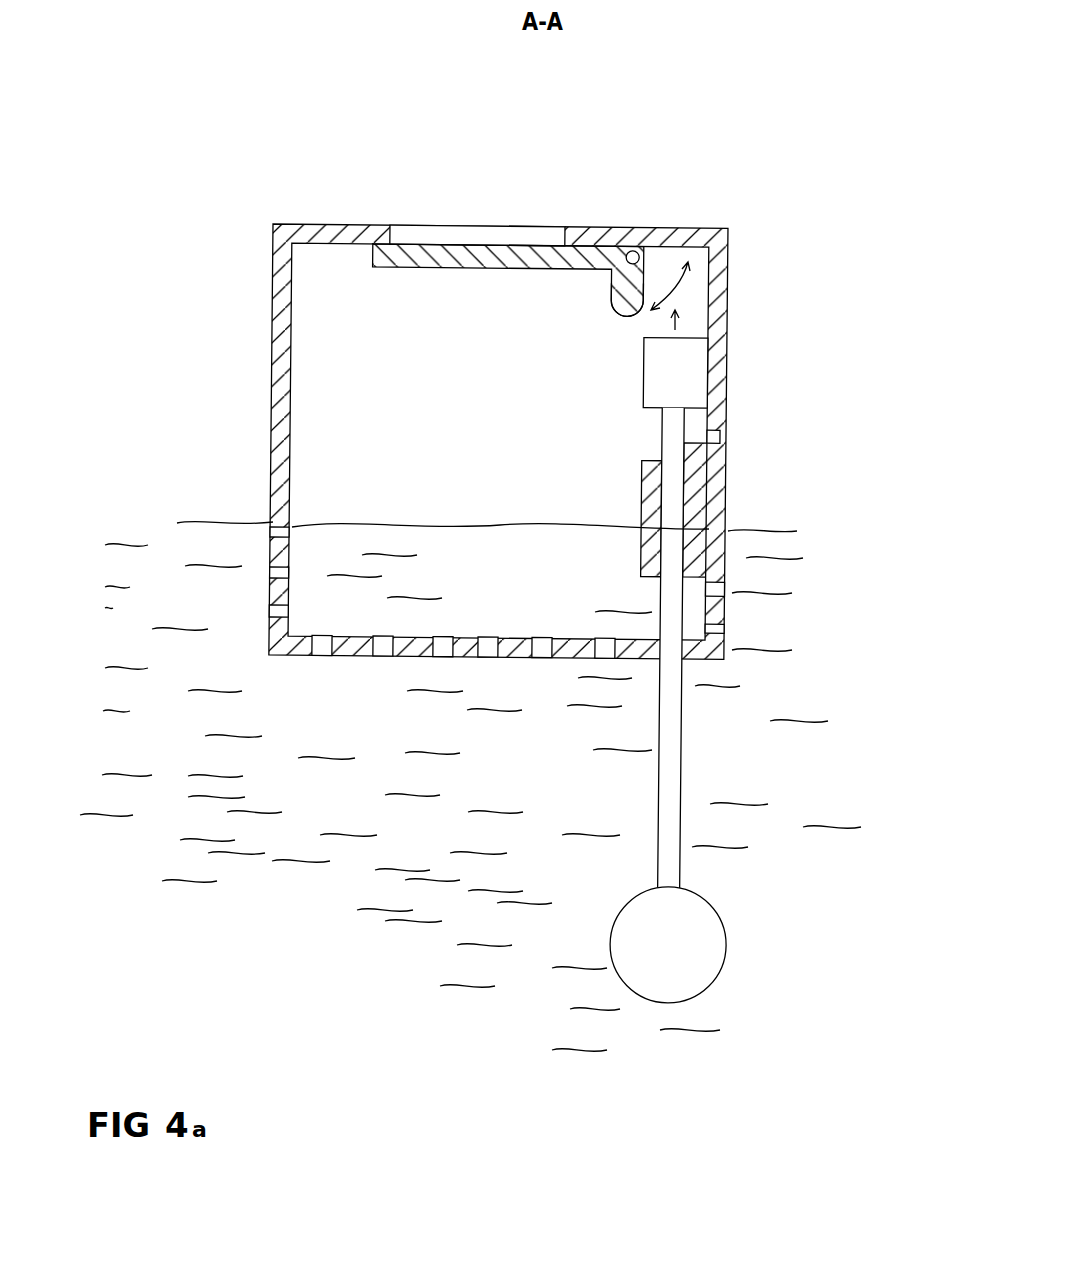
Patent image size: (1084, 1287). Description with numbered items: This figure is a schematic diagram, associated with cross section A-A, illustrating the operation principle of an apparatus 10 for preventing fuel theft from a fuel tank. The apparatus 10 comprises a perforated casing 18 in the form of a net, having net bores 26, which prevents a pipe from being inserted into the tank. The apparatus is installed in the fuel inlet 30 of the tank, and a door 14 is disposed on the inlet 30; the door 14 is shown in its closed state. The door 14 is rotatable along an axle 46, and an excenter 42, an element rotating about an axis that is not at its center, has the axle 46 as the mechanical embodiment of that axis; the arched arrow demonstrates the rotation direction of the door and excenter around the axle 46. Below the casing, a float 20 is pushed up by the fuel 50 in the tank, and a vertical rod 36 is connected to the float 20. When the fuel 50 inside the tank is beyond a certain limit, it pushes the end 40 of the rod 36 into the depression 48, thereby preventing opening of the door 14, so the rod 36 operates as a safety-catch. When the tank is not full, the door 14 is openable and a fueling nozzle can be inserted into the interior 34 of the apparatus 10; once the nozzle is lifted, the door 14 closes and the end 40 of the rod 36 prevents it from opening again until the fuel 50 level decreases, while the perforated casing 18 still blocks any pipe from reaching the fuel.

The apparatus for preventing fuel theft 10 is at (802, 147).
The perforated casing 18 is at (727, 327).
The fuel inlet 30 is at (497, 238).
The net bores 26 is at (280, 616).
The door 14 is at (428, 266).
The excenter 42 is at (628, 314).
The axle 46 is at (645, 247).
The end of rod 40 is at (687, 386).
The depression 48 is at (688, 303).
The interior of the tank 34 is at (484, 489).
The rod 36 is at (683, 741).
The float 20 is at (706, 936).
The fuel 50 is at (474, 588).